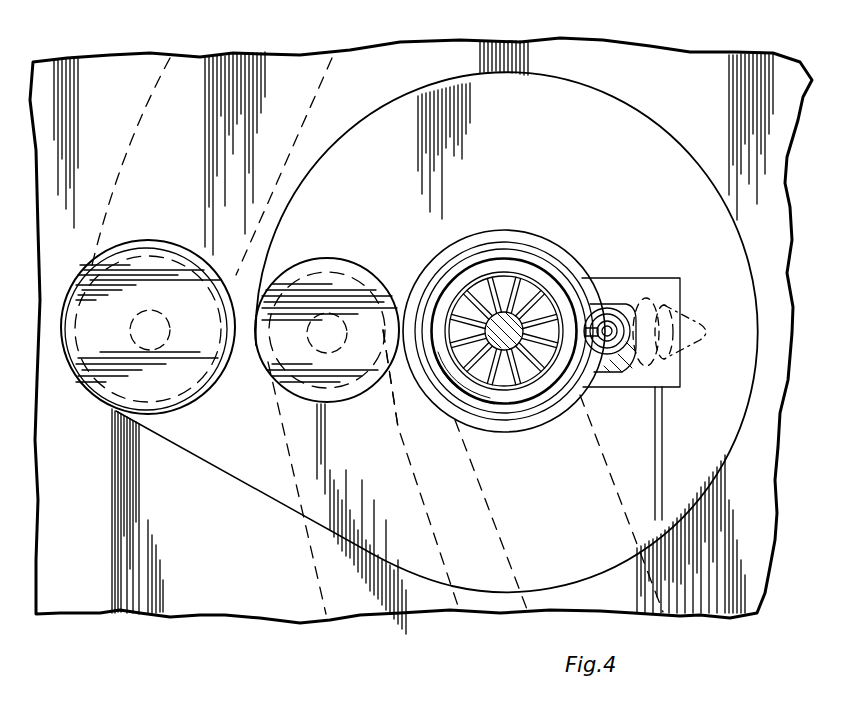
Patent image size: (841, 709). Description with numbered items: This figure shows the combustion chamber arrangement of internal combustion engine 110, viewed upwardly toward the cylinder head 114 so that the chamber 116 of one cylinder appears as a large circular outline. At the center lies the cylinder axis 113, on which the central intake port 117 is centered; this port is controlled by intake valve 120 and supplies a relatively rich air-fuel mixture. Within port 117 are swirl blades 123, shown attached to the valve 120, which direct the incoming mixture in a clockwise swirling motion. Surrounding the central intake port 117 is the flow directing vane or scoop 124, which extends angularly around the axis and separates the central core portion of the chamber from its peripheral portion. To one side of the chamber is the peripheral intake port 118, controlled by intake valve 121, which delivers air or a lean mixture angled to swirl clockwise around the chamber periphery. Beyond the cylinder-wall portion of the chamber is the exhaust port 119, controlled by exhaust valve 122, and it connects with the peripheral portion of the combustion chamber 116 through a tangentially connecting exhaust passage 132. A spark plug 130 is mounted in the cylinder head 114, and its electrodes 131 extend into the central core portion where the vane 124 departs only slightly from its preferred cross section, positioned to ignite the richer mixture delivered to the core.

The internal combustion engine 110 is at (698, 50).
The cylinder axis 113 is at (465, 314).
The cylinder head 114 is at (375, 75).
The combustion chamber 116 is at (578, 107).
The central intake port 117 is at (540, 288).
The peripheral intake port 118 is at (394, 433).
The exhaust port 119 is at (158, 84).
The intake valve 120 is at (522, 346).
The intake valve 121 is at (323, 265).
The exhaust valve 122 is at (150, 258).
The swirl blades 123 is at (496, 290).
The flow directing vane 124 is at (468, 250).
The spark plug 130 is at (674, 292).
The electrodes 131 is at (600, 320).
The tangentially connecting exhaust passage 132 is at (197, 443).